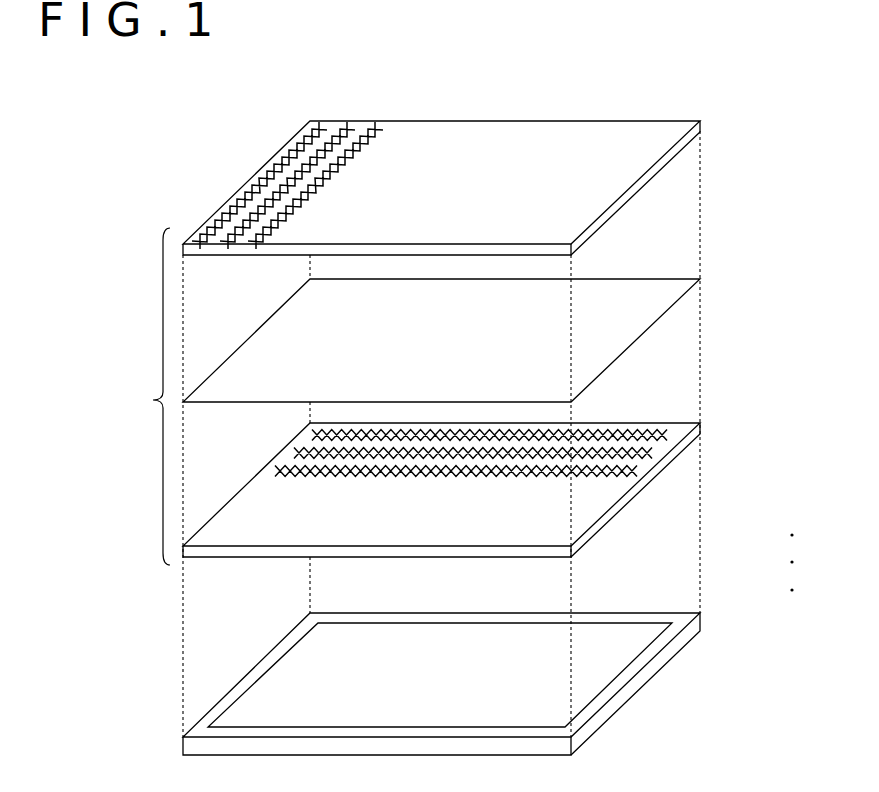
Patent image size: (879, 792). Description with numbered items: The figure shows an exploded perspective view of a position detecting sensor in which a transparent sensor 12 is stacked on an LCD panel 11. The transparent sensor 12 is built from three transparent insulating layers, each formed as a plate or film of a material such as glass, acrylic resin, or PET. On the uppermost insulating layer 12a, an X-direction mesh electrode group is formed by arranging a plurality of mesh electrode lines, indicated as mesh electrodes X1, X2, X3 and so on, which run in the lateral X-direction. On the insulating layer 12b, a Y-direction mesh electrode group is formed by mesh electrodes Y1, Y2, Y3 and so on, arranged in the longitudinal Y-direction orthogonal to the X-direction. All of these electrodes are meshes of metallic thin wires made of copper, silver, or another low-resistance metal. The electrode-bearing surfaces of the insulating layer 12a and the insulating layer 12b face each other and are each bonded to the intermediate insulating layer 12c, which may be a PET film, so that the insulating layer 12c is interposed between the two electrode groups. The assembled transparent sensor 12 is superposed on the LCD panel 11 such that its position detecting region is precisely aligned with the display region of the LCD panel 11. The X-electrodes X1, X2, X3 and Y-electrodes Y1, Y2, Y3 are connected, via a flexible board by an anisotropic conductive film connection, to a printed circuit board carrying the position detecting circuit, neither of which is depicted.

The LCD panel 11 is at (258, 693).
The transparent sensor 12 is at (144, 396).
The insulating layer 12a is at (677, 157).
The insulating layer 12b is at (612, 517).
The insulating layer 12c is at (665, 300).
The mesh electrode X1 is at (317, 121).
The mesh electrode X2 is at (347, 121).
The mesh electrode X3 is at (375, 122).
The mesh electrode Y1 is at (665, 439).
The mesh electrode Y2 is at (653, 456).
The mesh electrode Y3 is at (638, 473).